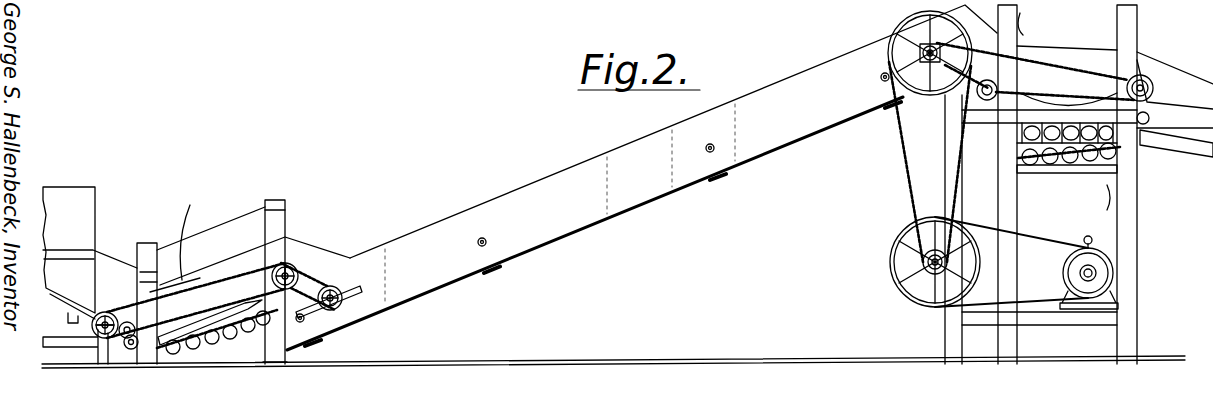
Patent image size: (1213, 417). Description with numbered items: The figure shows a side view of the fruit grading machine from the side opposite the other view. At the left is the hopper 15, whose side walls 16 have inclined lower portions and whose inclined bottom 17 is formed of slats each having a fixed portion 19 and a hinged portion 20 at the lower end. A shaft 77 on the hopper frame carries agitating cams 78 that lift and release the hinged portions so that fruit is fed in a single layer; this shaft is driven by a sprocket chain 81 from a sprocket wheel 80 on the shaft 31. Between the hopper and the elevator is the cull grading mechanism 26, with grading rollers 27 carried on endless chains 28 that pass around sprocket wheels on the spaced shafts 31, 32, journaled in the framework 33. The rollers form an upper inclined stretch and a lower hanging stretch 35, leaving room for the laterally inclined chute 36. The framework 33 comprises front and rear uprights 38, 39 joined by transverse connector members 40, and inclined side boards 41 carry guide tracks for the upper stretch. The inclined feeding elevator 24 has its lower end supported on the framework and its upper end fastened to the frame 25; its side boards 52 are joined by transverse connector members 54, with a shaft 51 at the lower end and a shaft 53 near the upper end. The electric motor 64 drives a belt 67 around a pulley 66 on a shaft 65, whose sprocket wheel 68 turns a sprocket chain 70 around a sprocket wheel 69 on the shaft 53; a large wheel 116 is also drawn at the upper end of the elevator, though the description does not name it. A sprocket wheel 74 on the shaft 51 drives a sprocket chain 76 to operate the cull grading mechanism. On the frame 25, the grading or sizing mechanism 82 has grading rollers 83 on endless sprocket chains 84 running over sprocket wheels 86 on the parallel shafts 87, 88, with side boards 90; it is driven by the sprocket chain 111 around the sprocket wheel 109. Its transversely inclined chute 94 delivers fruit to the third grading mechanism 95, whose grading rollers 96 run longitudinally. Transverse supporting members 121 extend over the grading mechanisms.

The hopper 15 is at (98, 193).
The side walls 16 is at (90, 249).
The bottom 17 is at (62, 292).
The fixed portion 19 is at (104, 336).
The movable or hinged portion 20 is at (78, 308).
The inclined feeding elevator 24 is at (604, 155).
The frame 25 is at (1018, 191).
The grading mechanism 26 is at (217, 338).
The grading rollers 27 is at (196, 348).
The endless chains or carriers 28 is at (213, 345).
The shaft 31 is at (290, 266).
The shaft 32 is at (137, 352).
The framework 33 is at (160, 262).
The lower hanging stretch 35 is at (277, 366).
The laterally inclined chute 36 is at (210, 314).
The front uprights 38 is at (142, 277).
The rear uprights 39 is at (280, 218).
The transverse connector members 40 is at (150, 246).
The inclined side boards 41 is at (222, 267).
The shaft 51 is at (343, 308).
The side boards 52 is at (592, 197).
The shaft 53 is at (930, 72).
The transverse connector members 54 is at (320, 345).
The electric motor 64 is at (1120, 262).
The shaft 65 is at (932, 276).
The pulley 66 is at (964, 282).
The belt 67 is at (1040, 243).
The sprocket wheel 68 is at (907, 277).
The sprocket wheel 69 is at (895, 93).
The sprocket chain 70 is at (908, 183).
The sprocket wheel 74 is at (335, 282).
The sprocket chain 76 is at (320, 272).
The shaft 77 is at (114, 350).
The agitating cams or arms 78 is at (108, 314).
The sprocket wheel 80 is at (278, 270).
The sprocket chain 81 is at (196, 286).
The grading or sizing mechanism 82 is at (1092, 165).
The grading rollers 83 is at (1137, 168).
The endless sprocket chains 84 is at (1093, 240).
The sprocket wheels 86 is at (977, 96).
The shaft 87 is at (1152, 85).
The shaft 88 is at (992, 104).
The side boards 90 is at (1068, 52).
The transversely-inclined chute 94 is at (1073, 97).
The third grading mechanism 95 is at (1148, 128).
The grading rollers 96 is at (1176, 143).
The sprocket wheel 109 is at (1145, 80).
The sprocket chain 111 is at (1045, 58).
The pulley 116 is at (962, 25).
The transverse supporting members 121 is at (188, 232).